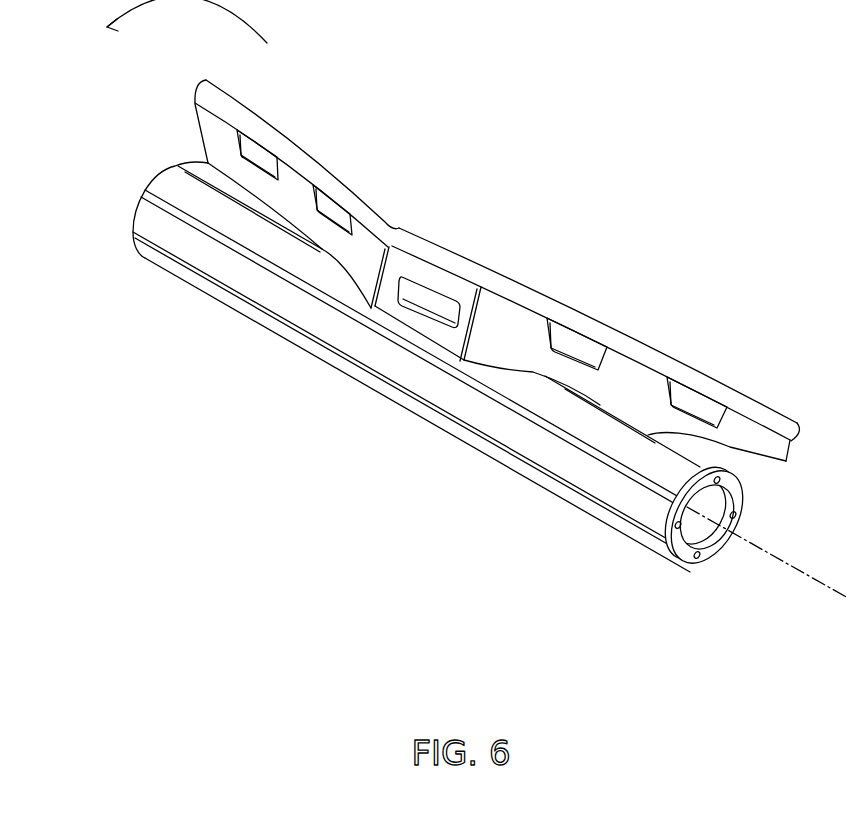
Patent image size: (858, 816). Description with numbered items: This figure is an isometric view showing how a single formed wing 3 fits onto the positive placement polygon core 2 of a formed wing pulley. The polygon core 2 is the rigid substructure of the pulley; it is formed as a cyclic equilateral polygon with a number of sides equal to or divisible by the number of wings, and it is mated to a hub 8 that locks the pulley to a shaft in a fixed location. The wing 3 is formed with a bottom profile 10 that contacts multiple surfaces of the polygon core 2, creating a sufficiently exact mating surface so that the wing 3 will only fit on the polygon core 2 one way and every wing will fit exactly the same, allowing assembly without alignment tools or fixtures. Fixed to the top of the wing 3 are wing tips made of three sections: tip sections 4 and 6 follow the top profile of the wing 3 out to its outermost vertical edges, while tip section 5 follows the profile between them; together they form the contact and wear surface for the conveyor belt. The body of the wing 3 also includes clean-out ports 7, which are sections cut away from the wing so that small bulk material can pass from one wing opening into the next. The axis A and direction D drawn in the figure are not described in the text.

The polygon core 2 is at (187, 200).
The wing 3 is at (210, 137).
The wing tip section 4 is at (298, 142).
The wing tip section 5 is at (426, 240).
The wing tip section 6 is at (687, 365).
The clean-out port 7 is at (548, 326).
The hub 8 is at (707, 553).
The bottom profile 10 is at (786, 462).
The axis A is at (767, 552).
The direction D is at (182, 25).